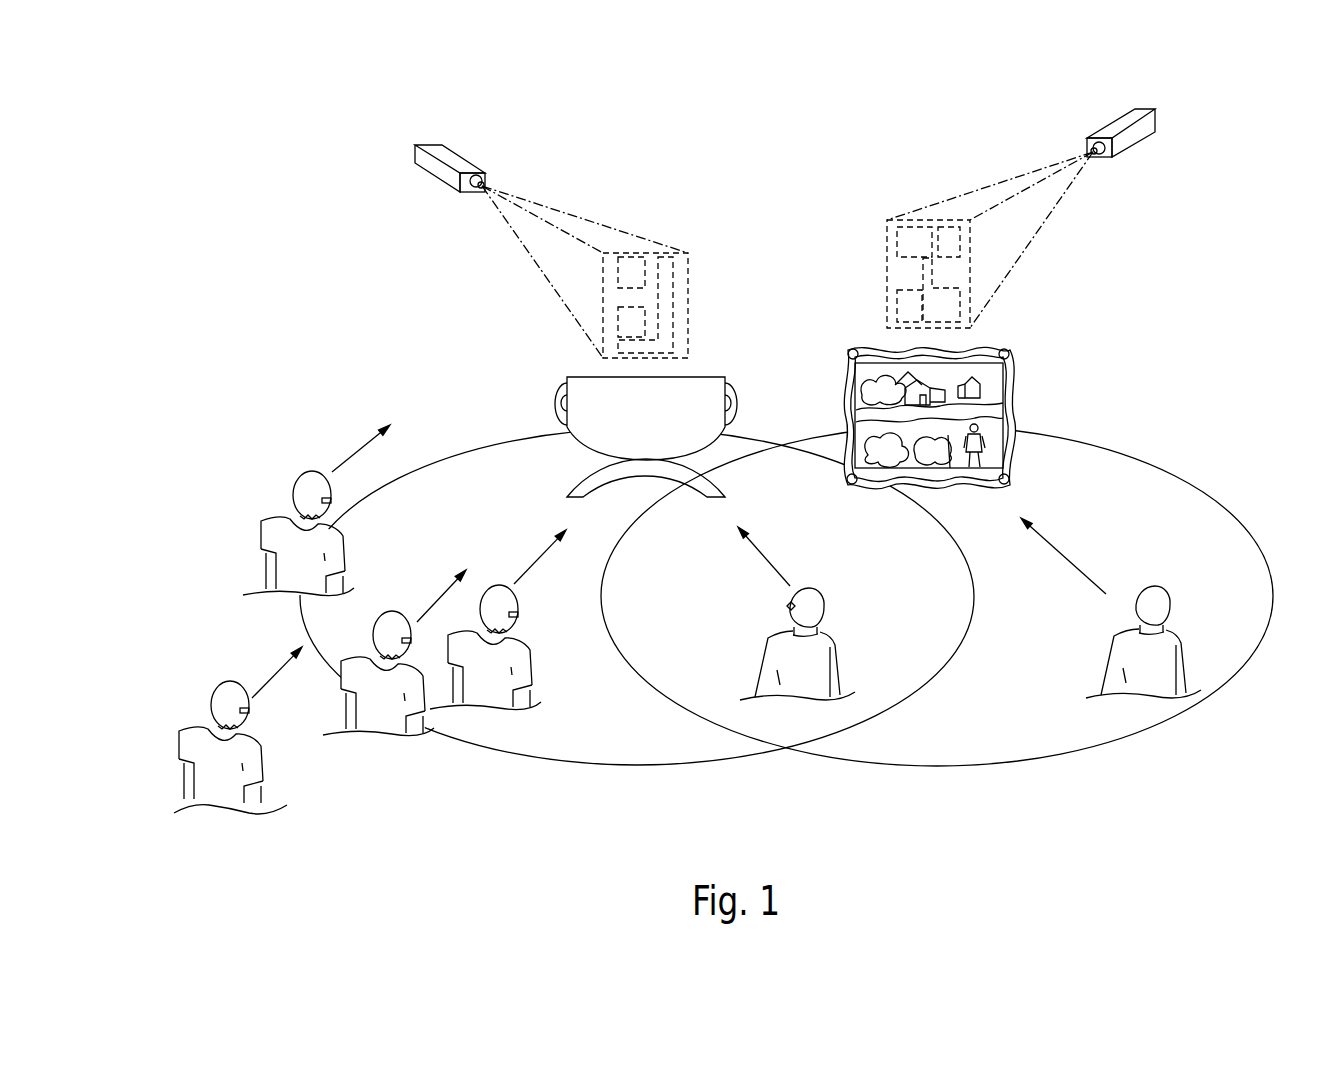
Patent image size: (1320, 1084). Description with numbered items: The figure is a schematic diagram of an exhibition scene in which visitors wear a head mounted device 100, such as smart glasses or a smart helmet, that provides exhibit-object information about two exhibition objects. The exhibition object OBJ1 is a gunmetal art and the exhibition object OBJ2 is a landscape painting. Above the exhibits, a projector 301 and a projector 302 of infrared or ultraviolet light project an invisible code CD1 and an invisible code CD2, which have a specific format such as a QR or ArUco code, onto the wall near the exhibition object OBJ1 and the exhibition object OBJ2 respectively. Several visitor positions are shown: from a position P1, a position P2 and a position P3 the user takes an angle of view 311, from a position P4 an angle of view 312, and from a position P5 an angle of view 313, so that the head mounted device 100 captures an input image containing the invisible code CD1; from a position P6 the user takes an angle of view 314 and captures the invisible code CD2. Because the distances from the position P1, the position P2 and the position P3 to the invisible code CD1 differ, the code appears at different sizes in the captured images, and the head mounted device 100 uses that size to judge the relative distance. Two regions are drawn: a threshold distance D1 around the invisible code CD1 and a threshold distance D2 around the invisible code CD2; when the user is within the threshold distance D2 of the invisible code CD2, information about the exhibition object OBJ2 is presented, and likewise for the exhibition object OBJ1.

The head mounted device 100 is at (518, 612).
The projector 301 is at (463, 162).
The projector 302 is at (1137, 147).
The angle of view 311 is at (540, 557).
The angle of view 312 is at (352, 455).
The angle of view 313 is at (771, 551).
The angle of view 314 is at (1068, 556).
The invisible code CD1 is at (688, 280).
The invisible code CD2 is at (970, 255).
The exhibition object OBJ1 is at (707, 377).
The exhibition object OBJ2 is at (1017, 388).
The position P1 is at (532, 678).
The position P2 is at (373, 633).
The position P3 is at (210, 707).
The position P4 is at (263, 525).
The position P5 is at (842, 657).
The position P6 is at (1186, 653).
The threshold distance D1 is at (660, 765).
The threshold distance D2 is at (968, 765).